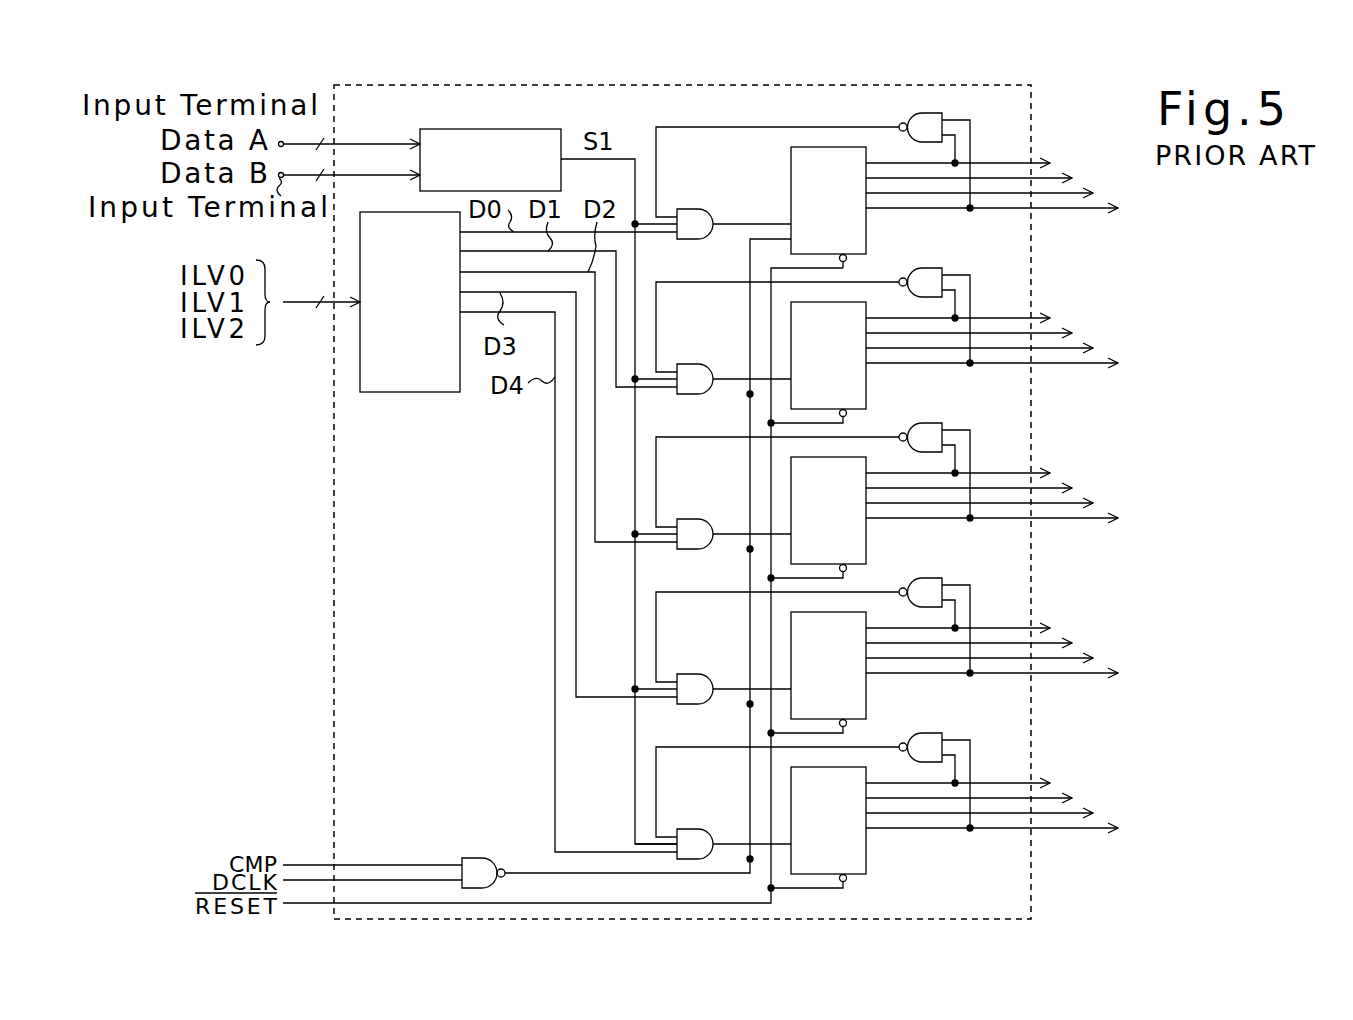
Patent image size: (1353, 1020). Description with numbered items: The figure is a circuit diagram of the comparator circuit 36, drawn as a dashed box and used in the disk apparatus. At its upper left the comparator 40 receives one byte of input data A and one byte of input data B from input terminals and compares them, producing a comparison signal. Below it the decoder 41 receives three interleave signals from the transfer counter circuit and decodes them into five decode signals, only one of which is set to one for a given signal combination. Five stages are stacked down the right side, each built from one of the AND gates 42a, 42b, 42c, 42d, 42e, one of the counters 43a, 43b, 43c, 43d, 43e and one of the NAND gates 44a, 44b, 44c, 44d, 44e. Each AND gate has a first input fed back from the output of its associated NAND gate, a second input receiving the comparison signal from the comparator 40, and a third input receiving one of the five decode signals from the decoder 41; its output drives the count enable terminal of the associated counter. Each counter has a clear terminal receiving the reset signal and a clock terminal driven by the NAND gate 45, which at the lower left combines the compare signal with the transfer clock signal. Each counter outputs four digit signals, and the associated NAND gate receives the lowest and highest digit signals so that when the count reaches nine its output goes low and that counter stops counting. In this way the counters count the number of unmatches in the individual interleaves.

The comparator circuit 36 is at (334, 548).
The comparator 40 is at (502, 129).
The decoder 41 is at (428, 393).
The AND gate 42a is at (695, 209).
The AND gate 42b is at (695, 364).
The AND gate 42c is at (695, 519).
The AND gate 42d is at (695, 674).
The AND gate 42e is at (695, 829).
The counter 43a is at (866, 228).
The counter 43b is at (866, 383).
The counter 43c is at (866, 538).
The counter 43d is at (866, 693).
The counter 43e is at (866, 848).
The NAND gate 44a is at (940, 108).
The NAND gate 44b is at (940, 263).
The NAND gate 44c is at (940, 418).
The NAND gate 44d is at (940, 573).
The NAND gate 44e is at (940, 728).
The NAND gate 45 is at (476, 858).